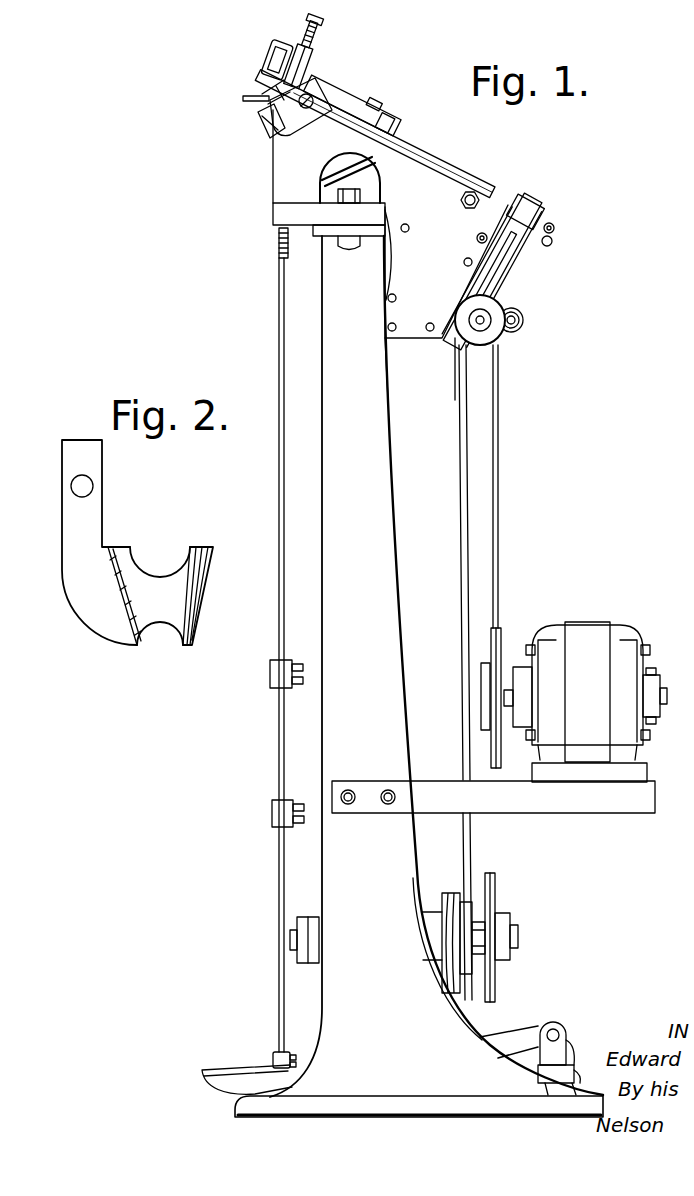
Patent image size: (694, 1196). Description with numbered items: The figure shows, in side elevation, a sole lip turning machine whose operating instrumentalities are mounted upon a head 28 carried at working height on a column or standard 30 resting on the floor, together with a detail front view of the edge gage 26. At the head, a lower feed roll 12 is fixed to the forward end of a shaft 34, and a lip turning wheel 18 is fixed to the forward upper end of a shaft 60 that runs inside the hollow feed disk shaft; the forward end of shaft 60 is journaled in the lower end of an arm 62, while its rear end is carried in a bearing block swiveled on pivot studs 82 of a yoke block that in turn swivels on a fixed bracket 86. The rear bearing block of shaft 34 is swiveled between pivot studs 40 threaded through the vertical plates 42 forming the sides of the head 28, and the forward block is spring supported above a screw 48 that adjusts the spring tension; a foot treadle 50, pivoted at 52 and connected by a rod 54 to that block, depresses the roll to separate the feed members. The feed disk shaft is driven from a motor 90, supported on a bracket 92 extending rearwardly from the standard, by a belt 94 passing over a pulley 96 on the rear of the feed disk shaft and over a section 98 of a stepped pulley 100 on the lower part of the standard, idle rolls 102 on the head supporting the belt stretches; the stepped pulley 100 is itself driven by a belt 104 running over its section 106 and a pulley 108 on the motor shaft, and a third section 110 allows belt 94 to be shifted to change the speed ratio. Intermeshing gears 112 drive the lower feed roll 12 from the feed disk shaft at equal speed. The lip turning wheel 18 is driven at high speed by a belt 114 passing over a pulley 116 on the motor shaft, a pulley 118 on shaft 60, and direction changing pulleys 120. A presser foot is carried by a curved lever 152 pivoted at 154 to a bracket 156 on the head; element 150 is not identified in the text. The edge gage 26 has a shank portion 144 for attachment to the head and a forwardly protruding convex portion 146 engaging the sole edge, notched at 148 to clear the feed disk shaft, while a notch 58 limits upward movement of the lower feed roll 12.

In FIG. 1, the lower feed roll 12 is at (262, 130).
In FIG. 1, the lip turning wheel 18 is at (262, 97).
In FIG. 2, the edge gage 26 is at (134, 658).
In FIG. 1, the head 28 is at (425, 185).
In FIG. 1, the column or standard 30 is at (372, 507).
In FIG. 1, the shaft 34 is at (356, 166).
In FIG. 1, the pivot studs 40 is at (476, 238).
In FIG. 1, the vertical plates 42 is at (410, 310).
In FIG. 1, the screw 48 is at (279, 244).
In FIG. 1, the foot treadle 50 is at (236, 1052).
In FIG. 1, the pivot 52 is at (555, 1033).
In FIG. 1, the rod 54 is at (280, 988).
In FIG. 2, the notch 58 is at (166, 638).
In FIG. 1, the shaft 60 is at (552, 242).
In FIG. 1, the arm 62 is at (277, 58).
In FIG. 1, the pivot studs 82 is at (546, 226).
In FIG. 1, the fixed bracket 86 is at (512, 260).
In FIG. 1, the motor 90 is at (580, 640).
In FIG. 1, the bracket 92 is at (515, 800).
In FIG. 1, the belt 94 is at (466, 412).
In FIG. 1, the pulley 96 is at (548, 196).
In FIG. 1, the section of stepped pulley 98 is at (472, 935).
In FIG. 1, the stepped pulley 100 is at (475, 991).
In FIG. 1, the idle rolls 102 is at (490, 333).
In FIG. 1, the belt 104 is at (488, 832).
In FIG. 1, the section of stepped pulley 106 is at (497, 890).
In FIG. 1, the pulley 108 is at (482, 680).
In FIG. 1, the third section 110 is at (452, 964).
In FIG. 1, the intermeshing gears 112 is at (510, 195).
In FIG. 1, the belt 114 is at (499, 453).
In FIG. 1, the pulley 116 is at (505, 635).
In FIG. 1, the pulley 118 is at (555, 228).
In FIG. 1, the direction changing pulleys 120 is at (525, 320).
In FIG. 2, the shank portion 144 is at (68, 462).
In FIG. 2, the convex portion 146 is at (182, 594).
In FIG. 2, the notch 148 is at (155, 560).
In FIG. 1, the bracket 150 is at (292, 78).
In FIG. 1, the curved lever 152 is at (338, 76).
In FIG. 1, the pivot 154 is at (366, 88).
In FIG. 1, the bracket 156 is at (384, 101).